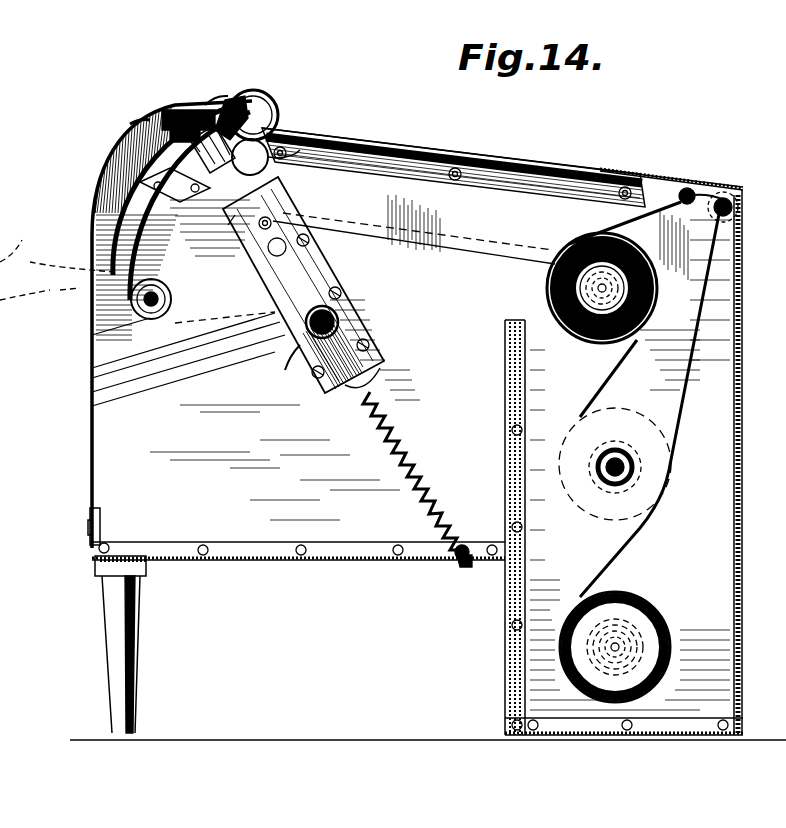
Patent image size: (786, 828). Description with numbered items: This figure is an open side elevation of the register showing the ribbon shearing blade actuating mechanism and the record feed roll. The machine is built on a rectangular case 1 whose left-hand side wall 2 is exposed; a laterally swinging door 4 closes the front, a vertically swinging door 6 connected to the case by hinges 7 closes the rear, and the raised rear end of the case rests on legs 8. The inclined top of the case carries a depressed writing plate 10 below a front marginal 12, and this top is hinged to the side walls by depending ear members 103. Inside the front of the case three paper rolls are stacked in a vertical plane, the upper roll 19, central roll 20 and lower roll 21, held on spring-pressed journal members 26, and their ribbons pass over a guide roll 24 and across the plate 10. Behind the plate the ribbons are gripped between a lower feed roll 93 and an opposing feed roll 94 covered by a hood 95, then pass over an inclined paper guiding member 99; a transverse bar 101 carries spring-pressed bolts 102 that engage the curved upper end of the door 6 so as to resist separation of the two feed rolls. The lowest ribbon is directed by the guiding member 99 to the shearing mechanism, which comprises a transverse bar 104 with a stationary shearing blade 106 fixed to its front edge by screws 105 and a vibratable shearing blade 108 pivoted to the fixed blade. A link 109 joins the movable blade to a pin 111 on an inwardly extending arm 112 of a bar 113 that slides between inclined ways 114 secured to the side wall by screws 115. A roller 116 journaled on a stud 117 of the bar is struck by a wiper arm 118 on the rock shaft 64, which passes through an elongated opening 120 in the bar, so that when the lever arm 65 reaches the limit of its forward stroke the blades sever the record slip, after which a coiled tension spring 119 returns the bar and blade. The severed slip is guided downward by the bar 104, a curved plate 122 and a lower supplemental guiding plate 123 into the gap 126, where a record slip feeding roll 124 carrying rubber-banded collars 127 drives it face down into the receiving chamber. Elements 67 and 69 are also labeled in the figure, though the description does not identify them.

The rectangular case 1 is at (257, 560).
The left-hand side wall 2 is at (342, 530).
The laterally swinging door 4 is at (740, 557).
The vertically swinging door 6 is at (92, 420).
The hinges 7 is at (92, 550).
The legs 8 is at (135, 632).
The writing plate 10 is at (392, 138).
The front marginal 12 is at (645, 170).
The upper paper carrying roll 19 is at (725, 289).
The central paper carrying roll 20 is at (675, 428).
The lower paper carrying roll 21 is at (672, 630).
The guide roll 24 is at (688, 188).
The spring-pressed journal members 26 is at (640, 466).
The rock shaft 64 is at (92, 366).
The lever arm 65 is at (40, 274).
The rod 67 is at (92, 391).
The rod 69 is at (92, 404).
The paper feed roll 93 is at (272, 150).
The opposing feed roll 94 is at (262, 108).
The hood 95 is at (236, 98).
The paper guiding member 99 is at (204, 106).
The transversely disposed bar 101 is at (165, 110).
The spring-pressed bolts 102 is at (176, 110).
The depending ear members 103 is at (733, 200).
The transverse bar 104 is at (135, 118).
The screws 105 is at (190, 146).
The stationary shearing blade 106 is at (145, 182).
The vibratable shearing blade 108 is at (212, 104).
The link 109 is at (342, 138).
The pin 111 is at (228, 230).
The inwardly extending arm 112 is at (270, 201).
The bar 113 is at (348, 395).
The ways 114 is at (318, 386).
The screws 115 is at (345, 272).
The roller 116 is at (290, 213).
The stud 117 is at (330, 252).
The wiper arm 118 is at (92, 378).
The coiled tension spring 119 is at (412, 468).
The elongated opening 120 is at (360, 372).
The curved plate 122 is at (92, 214).
The lower supplemental guiding plate 123 is at (96, 250).
The record slip feeding roll 124 is at (92, 335).
The gap 126 is at (110, 270).
The collars 127 is at (130, 303).